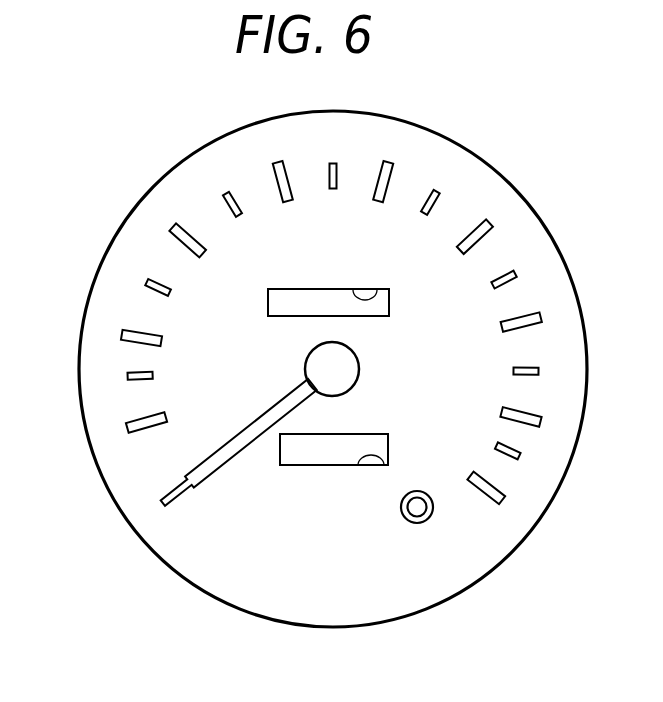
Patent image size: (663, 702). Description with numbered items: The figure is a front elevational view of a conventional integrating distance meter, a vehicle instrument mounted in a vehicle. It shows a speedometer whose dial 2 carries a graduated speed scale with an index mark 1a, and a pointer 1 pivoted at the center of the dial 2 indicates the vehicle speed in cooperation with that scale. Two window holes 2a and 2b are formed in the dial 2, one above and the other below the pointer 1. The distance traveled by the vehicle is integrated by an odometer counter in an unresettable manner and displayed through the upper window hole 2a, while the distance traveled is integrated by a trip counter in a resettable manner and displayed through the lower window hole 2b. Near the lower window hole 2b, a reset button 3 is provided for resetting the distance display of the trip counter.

The pointer 1 is at (245, 440).
The scale index mark 1a is at (123, 337).
The dial 2 is at (135, 242).
The window hole 2a is at (377, 290).
The window hole 2b is at (386, 464).
The reset button 3 is at (408, 507).